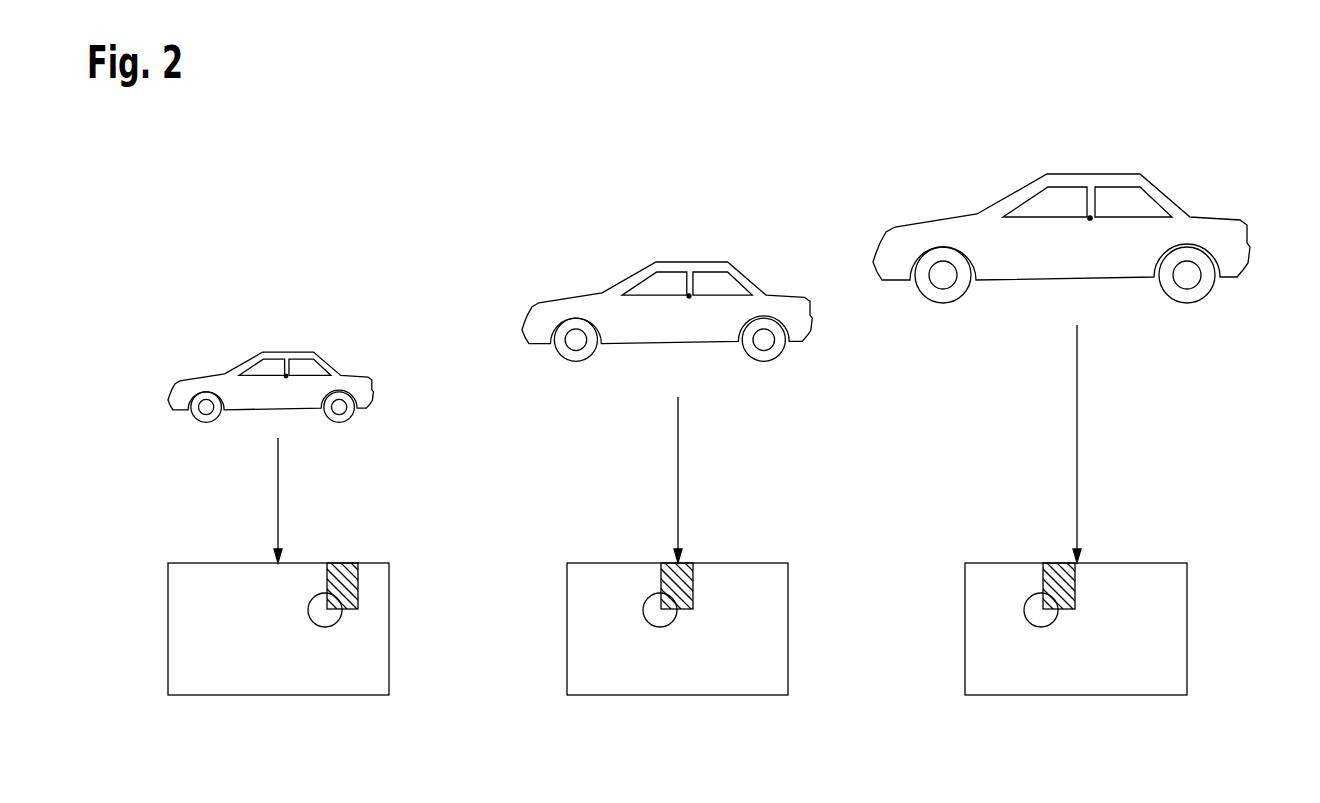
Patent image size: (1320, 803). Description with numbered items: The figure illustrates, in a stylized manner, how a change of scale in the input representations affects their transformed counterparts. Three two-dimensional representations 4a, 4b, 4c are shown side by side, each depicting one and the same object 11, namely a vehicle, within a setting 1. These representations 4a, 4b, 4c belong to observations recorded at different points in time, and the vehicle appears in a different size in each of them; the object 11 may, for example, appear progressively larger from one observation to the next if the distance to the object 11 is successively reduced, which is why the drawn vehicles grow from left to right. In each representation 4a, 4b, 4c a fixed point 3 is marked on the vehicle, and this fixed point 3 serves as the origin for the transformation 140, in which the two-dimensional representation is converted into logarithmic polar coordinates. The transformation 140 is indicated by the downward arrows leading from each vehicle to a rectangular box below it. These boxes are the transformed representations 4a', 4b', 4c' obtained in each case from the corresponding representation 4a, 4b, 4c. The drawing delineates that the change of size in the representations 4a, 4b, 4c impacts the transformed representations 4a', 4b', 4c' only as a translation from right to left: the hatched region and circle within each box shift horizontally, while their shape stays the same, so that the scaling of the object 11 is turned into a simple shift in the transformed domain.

The setting 1 is at (717, 268).
The object 11 is at (717, 268).
The fixed point 3 is at (285, 376).
The two-dimensional representation 4a is at (269, 343).
The two-dimensional representation 4b is at (667, 268).
The two-dimensional representation 4c is at (1061, 209).
The transformed representation 4a' is at (330, 629).
The transformed representation 4b' is at (729, 629).
The transformed representation 4c' is at (1127, 629).
The transformation 140 is at (278, 506).